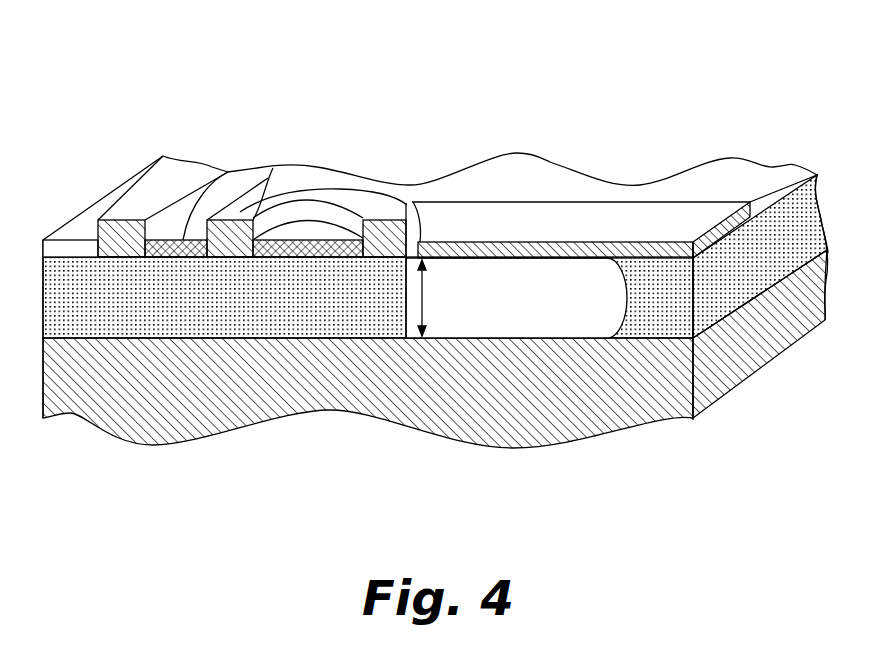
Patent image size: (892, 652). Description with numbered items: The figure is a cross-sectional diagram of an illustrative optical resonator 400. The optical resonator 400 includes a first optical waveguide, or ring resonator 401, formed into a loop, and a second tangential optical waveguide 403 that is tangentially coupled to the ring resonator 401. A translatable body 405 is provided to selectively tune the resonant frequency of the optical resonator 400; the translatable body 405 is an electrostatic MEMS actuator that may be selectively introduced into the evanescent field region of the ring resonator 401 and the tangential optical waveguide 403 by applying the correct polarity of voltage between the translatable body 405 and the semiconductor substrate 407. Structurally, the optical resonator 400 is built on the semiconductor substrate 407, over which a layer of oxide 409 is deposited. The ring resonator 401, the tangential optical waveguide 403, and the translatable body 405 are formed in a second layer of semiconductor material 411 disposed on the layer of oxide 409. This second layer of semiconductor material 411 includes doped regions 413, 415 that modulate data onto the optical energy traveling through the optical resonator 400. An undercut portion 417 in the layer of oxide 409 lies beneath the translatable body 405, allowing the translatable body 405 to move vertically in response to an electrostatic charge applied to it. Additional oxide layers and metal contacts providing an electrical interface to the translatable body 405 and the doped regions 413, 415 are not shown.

The optical resonator 400 is at (107, 101).
The ring resonator 401 is at (334, 200).
The second tangential optical waveguide 403 is at (200, 170).
The translatable body 405 is at (580, 228).
The semiconductor substrate 407 is at (733, 352).
The layer of oxide 409 is at (817, 217).
The second layer of semiconductor material 411 is at (50, 250).
The doped region 413 is at (272, 176).
The doped region 415 is at (323, 243).
The undercut portion 417 is at (483, 297).